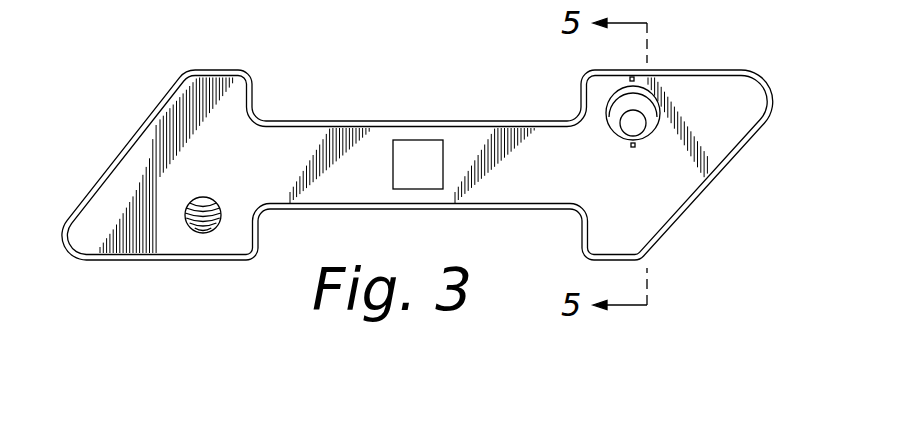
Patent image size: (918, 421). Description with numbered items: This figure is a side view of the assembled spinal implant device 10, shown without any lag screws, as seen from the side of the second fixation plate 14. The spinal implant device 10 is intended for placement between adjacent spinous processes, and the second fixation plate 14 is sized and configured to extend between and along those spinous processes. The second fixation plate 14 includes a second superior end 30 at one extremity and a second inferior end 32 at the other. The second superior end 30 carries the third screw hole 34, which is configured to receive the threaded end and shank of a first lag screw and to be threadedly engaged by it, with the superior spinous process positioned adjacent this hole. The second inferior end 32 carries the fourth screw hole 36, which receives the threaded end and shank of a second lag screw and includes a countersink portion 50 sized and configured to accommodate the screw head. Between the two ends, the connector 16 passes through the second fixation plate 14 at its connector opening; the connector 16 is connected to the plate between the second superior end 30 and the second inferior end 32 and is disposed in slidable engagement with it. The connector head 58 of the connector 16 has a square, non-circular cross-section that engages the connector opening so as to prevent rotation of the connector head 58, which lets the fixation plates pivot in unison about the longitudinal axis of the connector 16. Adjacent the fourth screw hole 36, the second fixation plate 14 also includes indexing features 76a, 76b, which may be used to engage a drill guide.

The spinal implant device 10 is at (113, 93).
The second fixation plate 14 is at (300, 130).
The connector 16 is at (408, 162).
The second superior end 30 is at (130, 162).
The second inferior end 32 is at (732, 133).
The third screw hole 34 is at (211, 231).
The fourth screw hole 36 is at (602, 86).
The countersink portion 50 is at (584, 85).
The connector head 58 is at (412, 152).
The indexing feature 76a is at (648, 77).
The indexing feature 76b is at (633, 147).